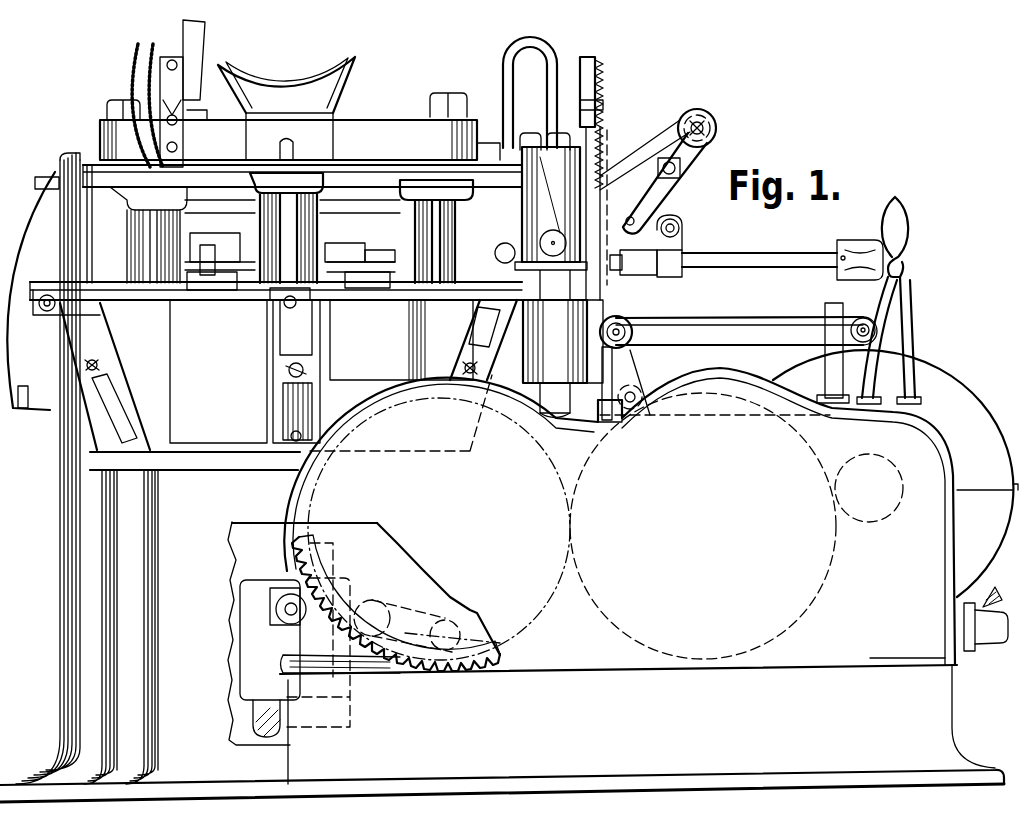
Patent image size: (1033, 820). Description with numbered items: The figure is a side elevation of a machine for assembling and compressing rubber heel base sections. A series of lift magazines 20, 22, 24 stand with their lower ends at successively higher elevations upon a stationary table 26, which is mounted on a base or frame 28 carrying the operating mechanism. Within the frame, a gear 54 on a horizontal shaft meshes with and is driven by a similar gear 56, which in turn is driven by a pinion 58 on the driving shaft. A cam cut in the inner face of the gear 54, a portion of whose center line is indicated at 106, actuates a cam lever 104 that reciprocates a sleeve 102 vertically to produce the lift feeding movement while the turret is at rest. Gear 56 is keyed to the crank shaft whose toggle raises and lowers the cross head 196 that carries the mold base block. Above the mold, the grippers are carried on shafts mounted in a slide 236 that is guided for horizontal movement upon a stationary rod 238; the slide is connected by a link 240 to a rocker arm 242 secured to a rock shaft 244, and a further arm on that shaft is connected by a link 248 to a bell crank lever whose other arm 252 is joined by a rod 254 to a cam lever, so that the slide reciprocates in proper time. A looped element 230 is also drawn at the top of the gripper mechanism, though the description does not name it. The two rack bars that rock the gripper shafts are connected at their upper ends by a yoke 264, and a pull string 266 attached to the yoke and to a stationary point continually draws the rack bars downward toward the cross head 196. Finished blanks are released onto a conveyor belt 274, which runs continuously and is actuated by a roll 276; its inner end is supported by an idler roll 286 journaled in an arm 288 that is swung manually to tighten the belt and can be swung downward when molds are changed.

The lift magazine 20 is at (428, 182).
The lift magazine 22 is at (304, 180).
The lift magazine 24 is at (186, 188).
The stationary table 26 is at (378, 300).
The base or frame 28 is at (84, 511).
The gear 54 is at (478, 660).
The gear 56 is at (628, 610).
The pinion 58 is at (890, 500).
The sleeve 102 is at (246, 627).
The cam lever 104 is at (322, 605).
The center line of cam path 106 is at (478, 607).
The cross head 196 is at (553, 390).
The U-shaped tube 230 is at (548, 52).
The slide 236 is at (670, 278).
The stationary rod 238 is at (735, 255).
The link 240 is at (680, 205).
The rocker arm 242 is at (675, 184).
The rock shaft 244 is at (705, 122).
The link 248 is at (628, 157).
The arm of bell crank lever 252 is at (524, 250).
The rod 254 is at (563, 341).
The yoke 264 is at (596, 60).
The pull string 266 is at (604, 122).
The conveyor belt 274 is at (765, 318).
The roll 276 is at (880, 325).
The idler roll 286 is at (633, 333).
The arm 288 is at (632, 371).